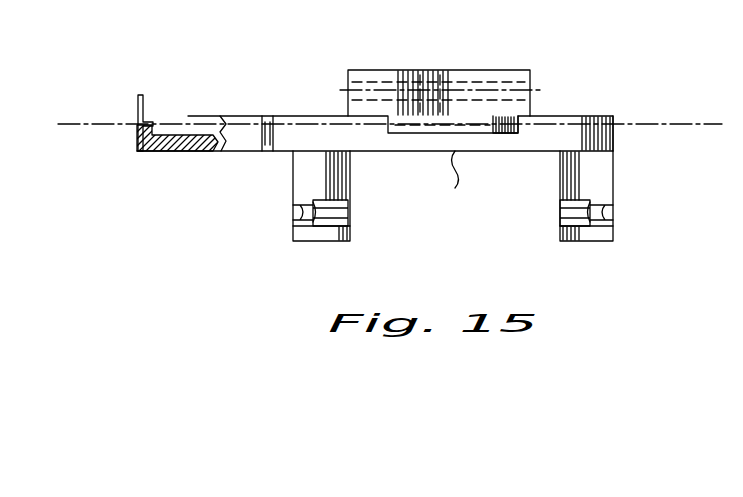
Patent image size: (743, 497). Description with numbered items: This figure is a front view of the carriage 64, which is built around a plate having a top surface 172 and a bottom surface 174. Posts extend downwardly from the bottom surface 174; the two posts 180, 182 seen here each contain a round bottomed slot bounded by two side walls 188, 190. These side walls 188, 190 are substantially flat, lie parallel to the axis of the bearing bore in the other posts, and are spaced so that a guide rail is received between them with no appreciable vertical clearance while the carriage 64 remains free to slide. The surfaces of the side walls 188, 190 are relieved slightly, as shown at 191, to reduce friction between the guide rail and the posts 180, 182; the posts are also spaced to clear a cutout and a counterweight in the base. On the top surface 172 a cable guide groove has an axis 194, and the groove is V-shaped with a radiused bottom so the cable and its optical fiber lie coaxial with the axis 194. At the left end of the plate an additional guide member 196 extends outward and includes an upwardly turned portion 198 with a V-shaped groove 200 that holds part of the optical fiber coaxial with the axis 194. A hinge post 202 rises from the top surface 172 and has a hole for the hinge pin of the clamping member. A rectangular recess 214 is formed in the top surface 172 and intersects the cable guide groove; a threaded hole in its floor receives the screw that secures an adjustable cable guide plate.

The carriage 64 is at (548, 62).
The top surface 172 is at (313, 114).
The bottom surface 174 is at (456, 184).
The post 180 is at (320, 242).
The post 182 is at (597, 242).
The side wall 188 is at (295, 208).
The side wall 190 is at (293, 215).
The relief 191 is at (350, 211).
The axis 194 is at (106, 124).
The guide member 196 is at (178, 152).
The upwardly turned portion 198 is at (137, 128).
The V-shaped groove 200 is at (143, 103).
The hinge post 202 is at (443, 70).
The rectangular recess 214 is at (513, 118).